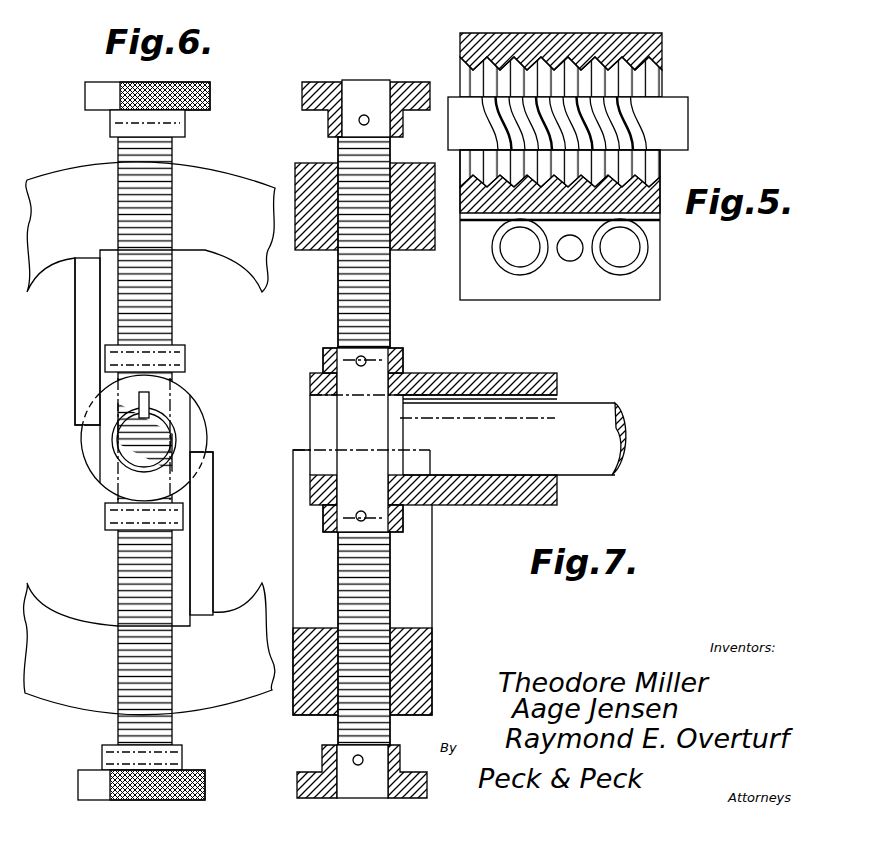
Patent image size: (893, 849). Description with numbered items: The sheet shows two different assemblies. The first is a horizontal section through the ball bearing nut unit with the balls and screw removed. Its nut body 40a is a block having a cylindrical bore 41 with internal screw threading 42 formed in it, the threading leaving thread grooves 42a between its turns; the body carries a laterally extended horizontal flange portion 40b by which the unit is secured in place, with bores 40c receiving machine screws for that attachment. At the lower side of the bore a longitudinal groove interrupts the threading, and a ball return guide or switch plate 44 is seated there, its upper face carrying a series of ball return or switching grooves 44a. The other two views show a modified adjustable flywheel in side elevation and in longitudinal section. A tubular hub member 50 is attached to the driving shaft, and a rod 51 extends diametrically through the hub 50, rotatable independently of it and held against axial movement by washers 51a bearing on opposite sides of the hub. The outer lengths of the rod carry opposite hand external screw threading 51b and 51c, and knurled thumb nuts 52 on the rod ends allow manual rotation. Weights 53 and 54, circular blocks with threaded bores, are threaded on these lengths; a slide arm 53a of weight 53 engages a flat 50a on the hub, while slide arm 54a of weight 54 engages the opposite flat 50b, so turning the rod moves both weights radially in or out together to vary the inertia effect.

In FIG. 5, the nut body 40a is at (660, 40).
In FIG. 5, the horizontal flange portion 40b is at (641, 283).
In FIG. 5, the bores 40c is at (640, 246).
In FIG. 5, the cylindrical bore 41 is at (662, 89).
In FIG. 5, the internal screw threading 42 is at (620, 56).
In FIG. 5, the thread grooves 42a is at (597, 66).
In FIG. 5, the switch plate 44 is at (670, 123).
In FIG. 5, the ball return grooves 44a is at (575, 131).
In FIG. 7, the tubular hub member 50 is at (477, 385).
In FIG. 6, the flat 50a is at (98, 452).
In FIG. 6, the flat 50b is at (196, 422).
In FIG. 7, the rod 51 is at (388, 315).
In FIG. 7, the washers 51a is at (402, 367).
In FIG. 6, the external screw threading 51b is at (168, 322).
In FIG. 6, the external screw threading 51c is at (118, 578).
In FIG. 7, the external screw threading 51c is at (335, 549).
In FIG. 6, the knurled thumb nuts 52 is at (206, 98).
In FIG. 7, the knurled thumb nuts 52 is at (312, 101).
In FIG. 6, the weight 53 is at (188, 187).
In FIG. 7, the weight 53 is at (318, 185).
In FIG. 6, the slide arm 53a is at (92, 316).
In FIG. 6, the weight 54 is at (105, 690).
In FIG. 7, the weight 54 is at (310, 698).
In FIG. 6, the slide arm 54a is at (200, 587).